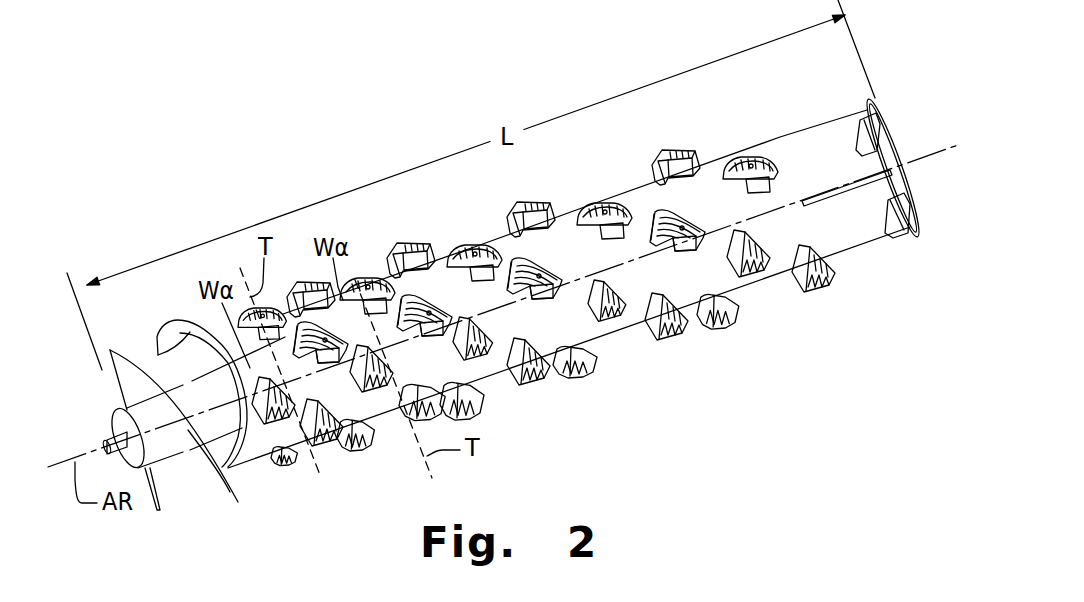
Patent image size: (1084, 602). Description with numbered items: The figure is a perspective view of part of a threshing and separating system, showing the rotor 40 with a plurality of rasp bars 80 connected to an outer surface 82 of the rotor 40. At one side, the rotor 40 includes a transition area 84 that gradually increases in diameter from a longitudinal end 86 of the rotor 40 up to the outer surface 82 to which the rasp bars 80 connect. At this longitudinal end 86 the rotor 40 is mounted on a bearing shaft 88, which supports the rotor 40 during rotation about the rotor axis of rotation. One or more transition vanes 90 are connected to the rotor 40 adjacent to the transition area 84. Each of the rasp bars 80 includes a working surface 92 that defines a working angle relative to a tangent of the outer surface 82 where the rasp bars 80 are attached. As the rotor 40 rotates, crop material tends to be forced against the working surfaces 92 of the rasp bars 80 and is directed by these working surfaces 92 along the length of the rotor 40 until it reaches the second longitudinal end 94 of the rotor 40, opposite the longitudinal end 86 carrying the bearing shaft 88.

The rotor 40 is at (677, 354).
The rasp bars 80 is at (275, 428).
The outer surface 82 is at (505, 247).
The transition area 84 is at (183, 478).
The longitudinal end 86 is at (112, 430).
The bearing shaft 88 is at (107, 443).
The transition vanes 90 is at (130, 365).
The working surface 92 is at (462, 390).
The second longitudinal end 94 is at (896, 148).